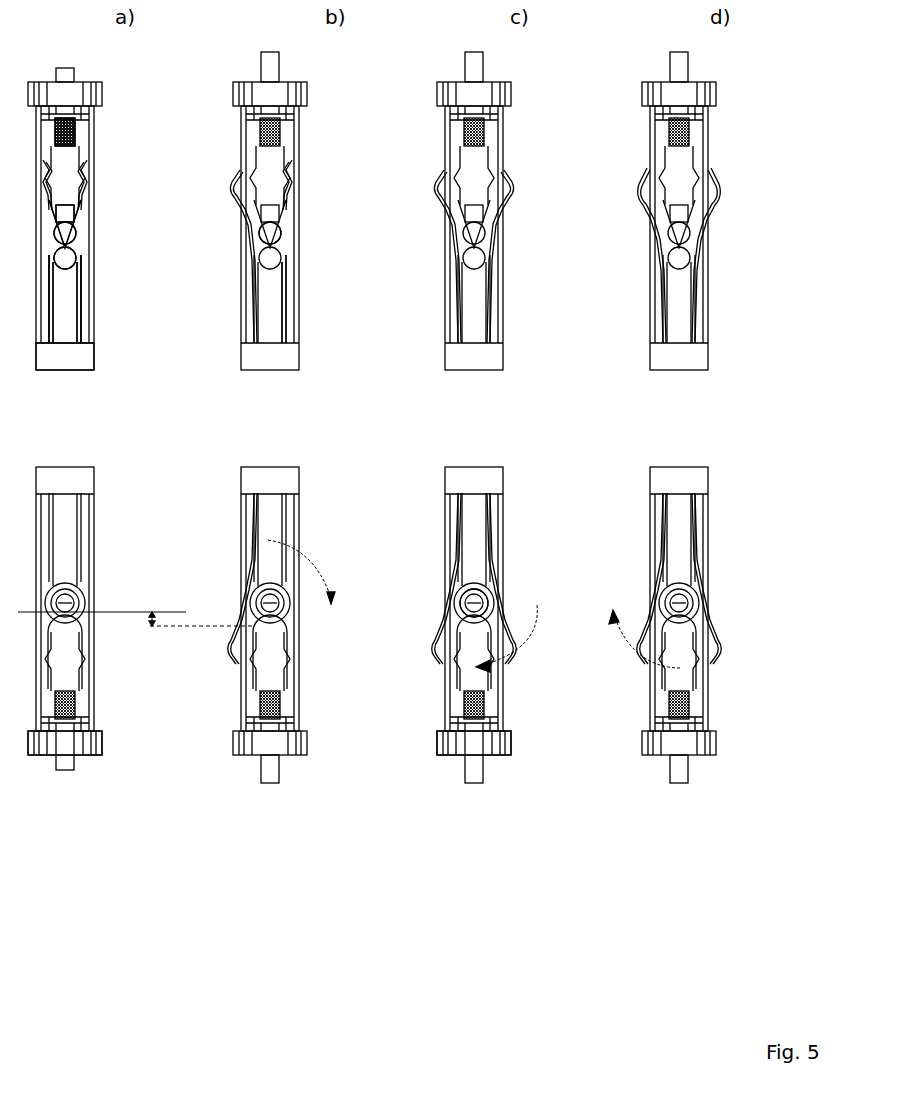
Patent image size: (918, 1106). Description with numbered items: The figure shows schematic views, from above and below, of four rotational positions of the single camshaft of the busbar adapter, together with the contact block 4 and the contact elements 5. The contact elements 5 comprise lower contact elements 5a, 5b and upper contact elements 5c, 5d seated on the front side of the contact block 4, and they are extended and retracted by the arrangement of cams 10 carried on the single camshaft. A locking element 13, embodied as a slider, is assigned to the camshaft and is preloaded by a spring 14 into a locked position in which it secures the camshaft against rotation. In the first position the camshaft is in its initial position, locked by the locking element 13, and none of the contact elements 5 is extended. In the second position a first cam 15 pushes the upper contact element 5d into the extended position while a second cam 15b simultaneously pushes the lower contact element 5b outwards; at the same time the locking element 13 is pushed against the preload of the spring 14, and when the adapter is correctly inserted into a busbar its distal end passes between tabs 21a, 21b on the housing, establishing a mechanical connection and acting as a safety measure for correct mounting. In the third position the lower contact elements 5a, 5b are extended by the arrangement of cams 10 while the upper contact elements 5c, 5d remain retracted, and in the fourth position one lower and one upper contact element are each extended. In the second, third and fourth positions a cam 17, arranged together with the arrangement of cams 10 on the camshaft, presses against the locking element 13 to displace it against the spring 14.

The contact block 4 is at (66, 373).
The contact elements 5 is at (79, 298).
The lower contact element 5a is at (500, 236).
The lower contact element 5b is at (437, 203).
The upper contact element 5c is at (284, 300).
The upper contact element 5d is at (226, 183).
The arrangement of cams 10 is at (84, 219).
The locking element 13 is at (66, 68).
The spring 14 is at (72, 143).
The ball 15 is at (247, 236).
The second cam 15b is at (268, 216).
The cam 17 is at (456, 616).
The tab 21a is at (37, 755).
The tab 21b is at (95, 755).